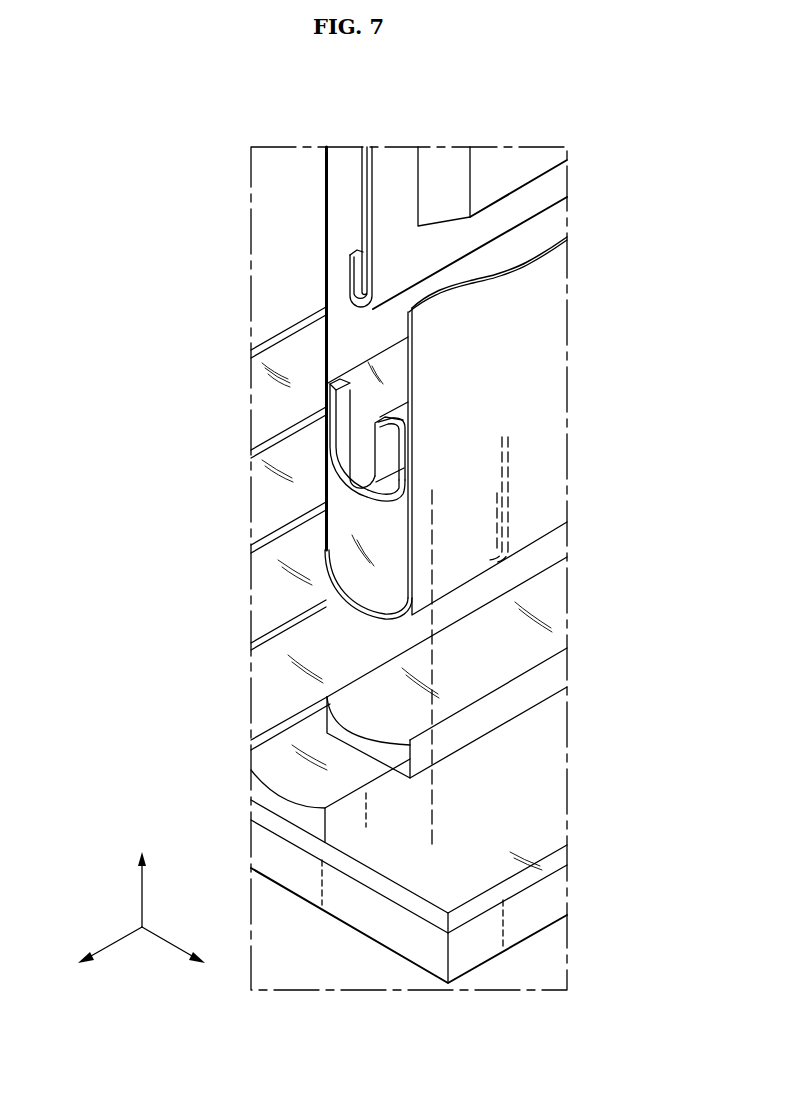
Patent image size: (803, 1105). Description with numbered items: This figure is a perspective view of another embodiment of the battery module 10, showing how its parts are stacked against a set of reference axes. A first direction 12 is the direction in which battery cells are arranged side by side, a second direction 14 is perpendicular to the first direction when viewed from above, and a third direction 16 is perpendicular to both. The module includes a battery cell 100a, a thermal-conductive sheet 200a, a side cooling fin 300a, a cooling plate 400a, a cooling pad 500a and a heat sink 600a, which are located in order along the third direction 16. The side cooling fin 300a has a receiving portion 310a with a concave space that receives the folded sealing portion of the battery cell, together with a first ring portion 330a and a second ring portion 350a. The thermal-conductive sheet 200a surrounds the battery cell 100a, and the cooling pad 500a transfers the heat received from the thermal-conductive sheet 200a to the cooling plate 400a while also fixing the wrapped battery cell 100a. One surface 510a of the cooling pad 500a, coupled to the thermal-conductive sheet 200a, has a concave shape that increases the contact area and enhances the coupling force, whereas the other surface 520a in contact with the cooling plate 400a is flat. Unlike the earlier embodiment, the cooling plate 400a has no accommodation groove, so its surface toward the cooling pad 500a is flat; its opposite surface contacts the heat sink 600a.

The battery module 10 is at (197, 92).
The first direction 12 is at (188, 953).
The second direction 14 is at (97, 953).
The third direction 16 is at (144, 878).
The battery cell 100a is at (487, 160).
The thermal-conductive sheet 200a is at (524, 333).
The side cooling fin 300a is at (315, 428).
The receiving portion 310a is at (373, 488).
The first ring portion 330a is at (327, 405).
The second ring portion 350a is at (382, 421).
The cooling plate 400a is at (558, 810).
The cooling pad 500a is at (482, 667).
The surface of the cooling pad 510a is at (480, 660).
The surface of the cooling pad 520a is at (483, 733).
The heat sink 600a is at (330, 937).